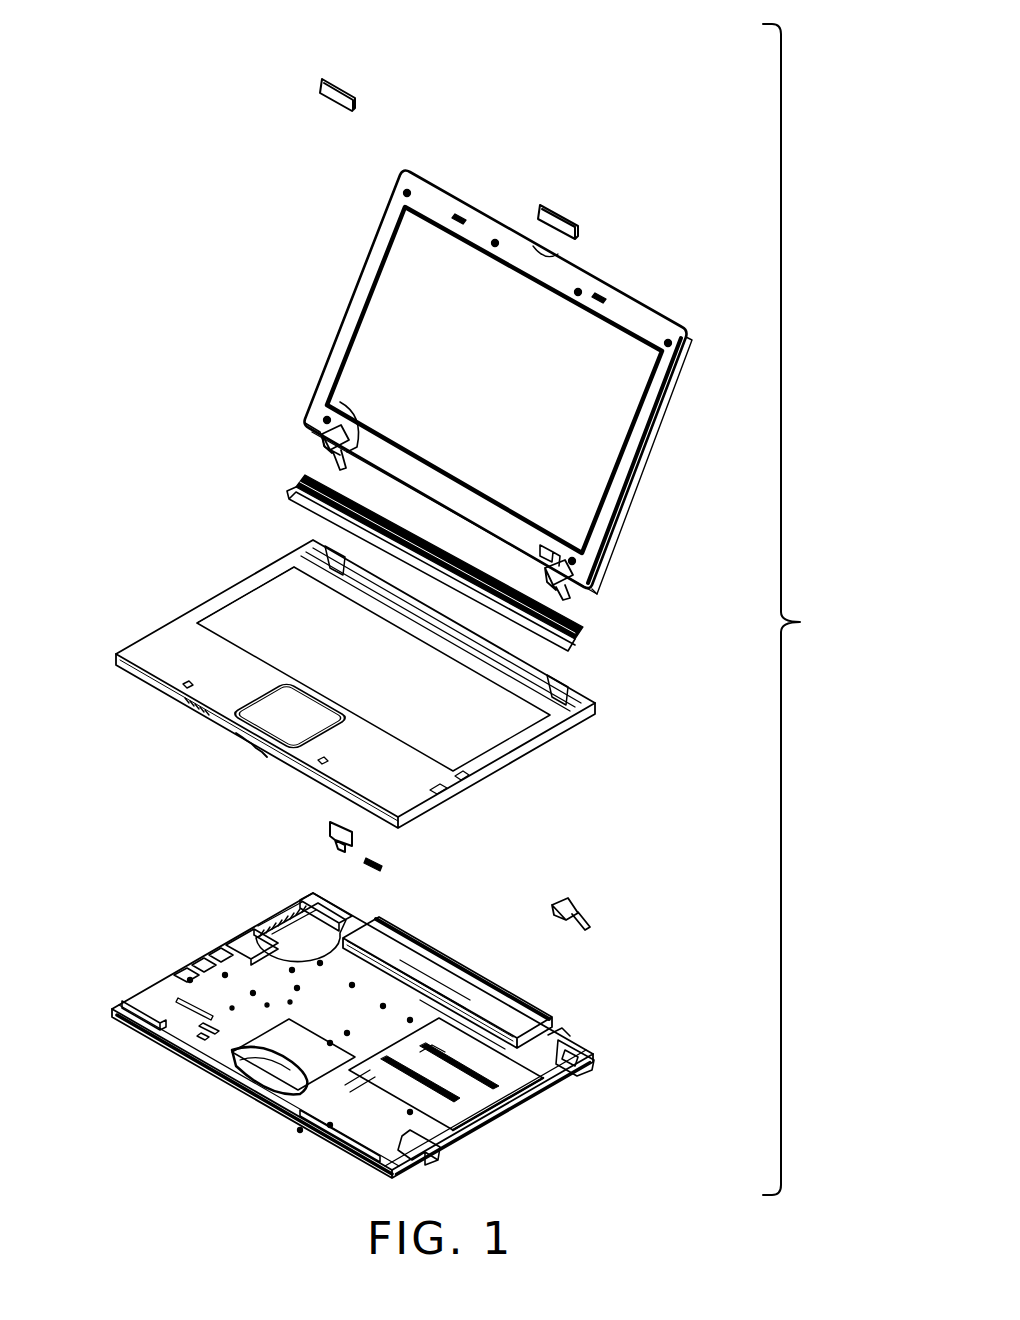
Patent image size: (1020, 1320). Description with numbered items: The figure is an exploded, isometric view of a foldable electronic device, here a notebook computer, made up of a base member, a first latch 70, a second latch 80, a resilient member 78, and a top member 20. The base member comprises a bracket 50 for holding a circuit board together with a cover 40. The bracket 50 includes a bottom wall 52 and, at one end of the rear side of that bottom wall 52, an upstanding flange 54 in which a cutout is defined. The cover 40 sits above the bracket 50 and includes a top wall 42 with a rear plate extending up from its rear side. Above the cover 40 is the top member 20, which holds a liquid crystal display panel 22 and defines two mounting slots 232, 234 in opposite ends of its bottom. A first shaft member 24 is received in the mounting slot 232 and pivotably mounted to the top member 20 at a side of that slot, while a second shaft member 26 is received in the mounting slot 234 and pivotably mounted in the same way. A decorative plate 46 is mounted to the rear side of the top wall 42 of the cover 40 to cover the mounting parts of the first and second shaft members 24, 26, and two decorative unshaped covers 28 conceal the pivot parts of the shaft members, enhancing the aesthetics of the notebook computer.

The top member 20 is at (640, 282).
The display panel 22 is at (400, 280).
The mounting slot 232 is at (356, 420).
The mounting slot 234 is at (553, 553).
The first shaft member 24 is at (322, 435).
The second shaft member 26 is at (572, 588).
The decorative unshaped cover 28 is at (560, 212).
The decorative plate 46 is at (565, 630).
The cover 40 is at (535, 760).
The top wall 42 is at (175, 645).
The first latch 70 is at (326, 826).
The resilient member 78 is at (383, 862).
The second latch 80 is at (586, 906).
The bracket 50 is at (187, 944).
The bottom wall 52 is at (470, 1100).
The flange 54 is at (592, 1052).